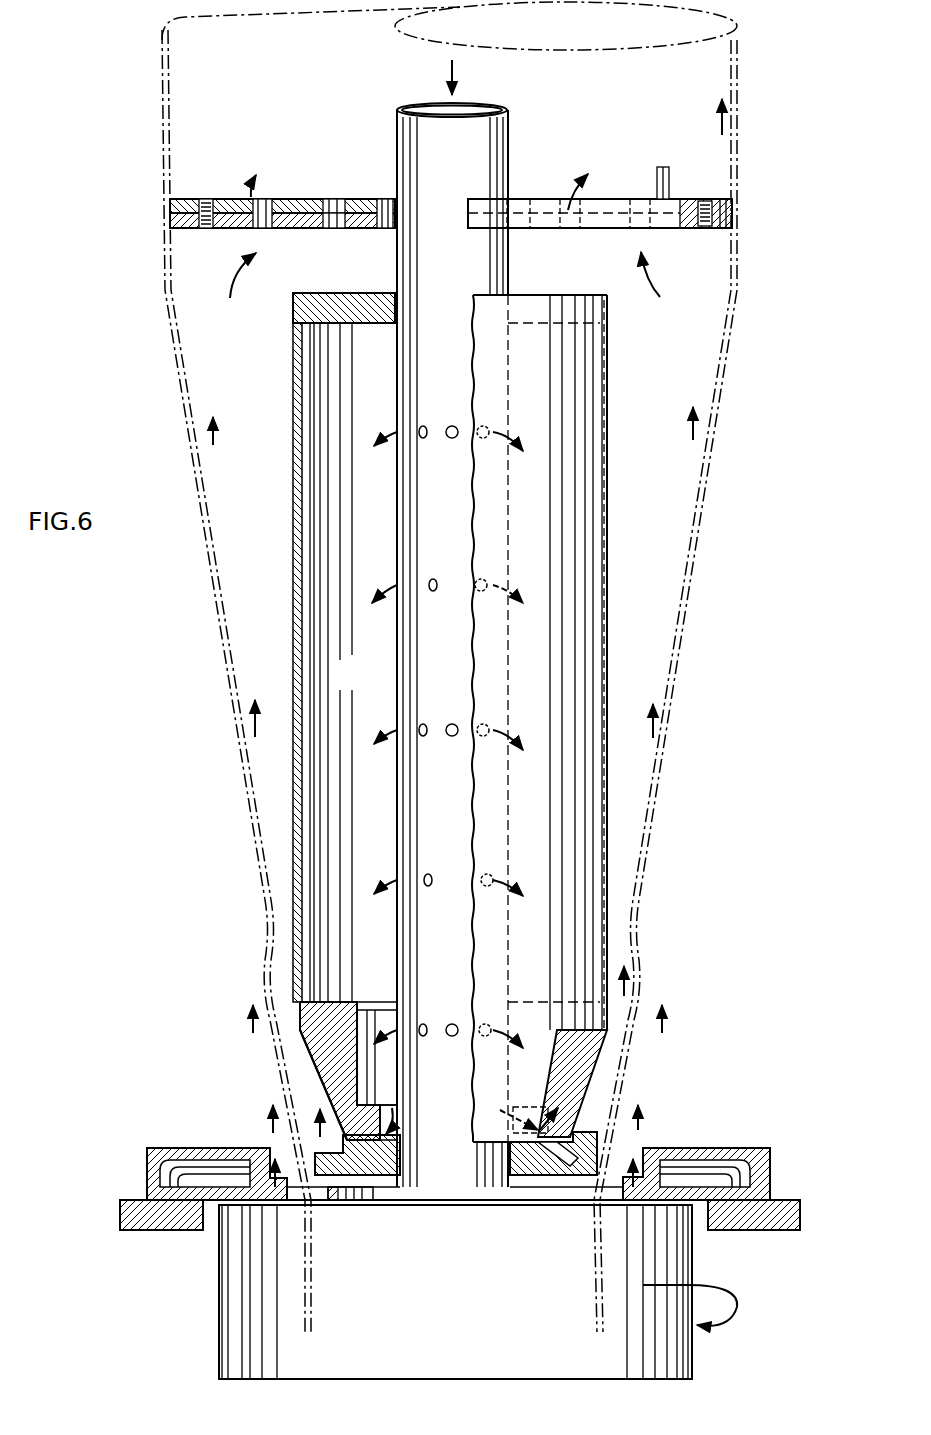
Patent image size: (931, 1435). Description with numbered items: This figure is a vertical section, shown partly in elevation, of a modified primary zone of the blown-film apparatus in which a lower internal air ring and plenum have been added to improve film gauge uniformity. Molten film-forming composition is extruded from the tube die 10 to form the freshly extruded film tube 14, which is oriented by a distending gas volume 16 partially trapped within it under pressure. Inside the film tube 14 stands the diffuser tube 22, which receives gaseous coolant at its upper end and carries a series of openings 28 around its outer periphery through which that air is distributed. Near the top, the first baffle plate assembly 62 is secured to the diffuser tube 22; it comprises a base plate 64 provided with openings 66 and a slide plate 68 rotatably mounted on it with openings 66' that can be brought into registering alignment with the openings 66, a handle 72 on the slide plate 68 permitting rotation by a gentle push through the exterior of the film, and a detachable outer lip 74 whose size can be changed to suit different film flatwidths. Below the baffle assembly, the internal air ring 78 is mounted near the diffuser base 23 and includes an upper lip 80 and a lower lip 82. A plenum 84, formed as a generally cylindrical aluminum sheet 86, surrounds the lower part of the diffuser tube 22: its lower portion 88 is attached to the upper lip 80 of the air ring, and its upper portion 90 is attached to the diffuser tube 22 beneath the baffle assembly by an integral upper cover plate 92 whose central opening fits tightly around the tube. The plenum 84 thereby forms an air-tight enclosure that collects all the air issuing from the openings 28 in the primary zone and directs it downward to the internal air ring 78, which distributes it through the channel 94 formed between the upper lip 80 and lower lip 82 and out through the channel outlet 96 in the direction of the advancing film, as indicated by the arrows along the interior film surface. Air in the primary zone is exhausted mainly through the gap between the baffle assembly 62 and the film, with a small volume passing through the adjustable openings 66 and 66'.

The tube die 10 is at (476, 1304).
The film tube 14 is at (237, 694).
The distending gas volume 16 is at (269, 516).
The diffuser tube 22 is at (493, 145).
The diffuser base 23 is at (383, 1200).
The openings 28 is at (421, 876).
The first baffle plate assembly 62 is at (600, 203).
The base plate 64 is at (248, 207).
The openings 66 is at (344, 242).
The openings 66' is at (348, 178).
The slide plate 68 is at (297, 199).
The handle 72 is at (658, 167).
The outer lip 74 is at (175, 211).
The internal air ring 78 is at (320, 1086).
The upper lip 80 is at (316, 1048).
The lower lip 82 is at (383, 1170).
The plenum 84 is at (462, 662).
The aluminum sheet 86 is at (612, 544).
The lower portion 88 is at (336, 942).
The upper portion 90 is at (571, 718).
The upper cover plate 92 is at (317, 308).
The channel 94 is at (386, 1128).
The channel outlet 96 is at (343, 1153).